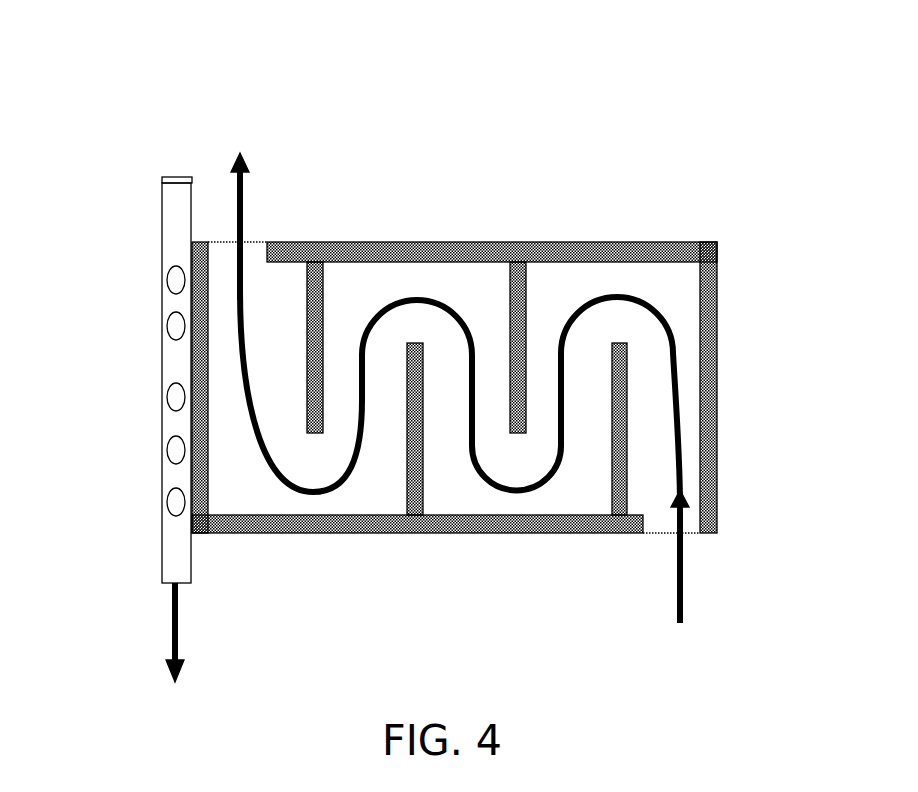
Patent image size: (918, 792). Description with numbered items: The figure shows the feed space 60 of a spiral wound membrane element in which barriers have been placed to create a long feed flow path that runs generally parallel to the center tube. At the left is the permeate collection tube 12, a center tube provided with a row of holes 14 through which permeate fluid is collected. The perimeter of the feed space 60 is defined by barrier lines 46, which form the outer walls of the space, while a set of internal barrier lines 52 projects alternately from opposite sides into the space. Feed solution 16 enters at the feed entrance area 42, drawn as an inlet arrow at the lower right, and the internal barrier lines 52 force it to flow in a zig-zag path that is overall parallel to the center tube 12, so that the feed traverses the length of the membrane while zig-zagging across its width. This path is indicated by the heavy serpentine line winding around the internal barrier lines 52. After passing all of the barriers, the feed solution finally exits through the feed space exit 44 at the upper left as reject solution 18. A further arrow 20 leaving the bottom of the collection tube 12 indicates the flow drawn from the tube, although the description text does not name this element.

The permeate collection tube 12 is at (162, 525).
The holes 14 is at (176, 280).
The feed solution 16 is at (683, 597).
The reject solution 18 is at (238, 183).
The outlet flow 20 is at (175, 633).
The feed entrance area 42 is at (663, 532).
The feed space exit 44 is at (253, 240).
The barrier lines 46 is at (382, 240).
The internal barrier lines 52 is at (527, 312).
The feed space 60 is at (470, 288).